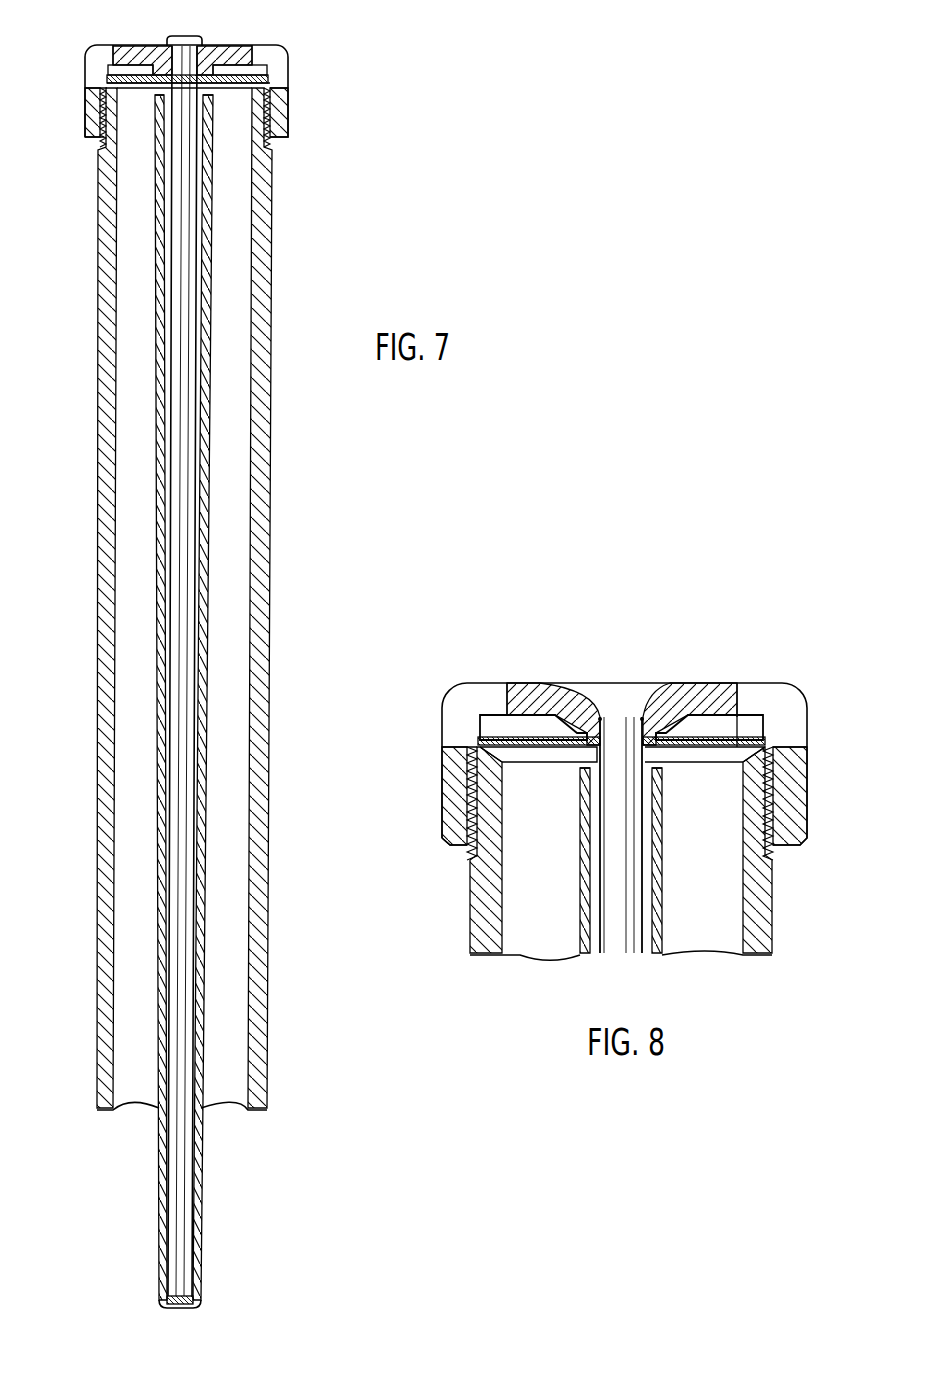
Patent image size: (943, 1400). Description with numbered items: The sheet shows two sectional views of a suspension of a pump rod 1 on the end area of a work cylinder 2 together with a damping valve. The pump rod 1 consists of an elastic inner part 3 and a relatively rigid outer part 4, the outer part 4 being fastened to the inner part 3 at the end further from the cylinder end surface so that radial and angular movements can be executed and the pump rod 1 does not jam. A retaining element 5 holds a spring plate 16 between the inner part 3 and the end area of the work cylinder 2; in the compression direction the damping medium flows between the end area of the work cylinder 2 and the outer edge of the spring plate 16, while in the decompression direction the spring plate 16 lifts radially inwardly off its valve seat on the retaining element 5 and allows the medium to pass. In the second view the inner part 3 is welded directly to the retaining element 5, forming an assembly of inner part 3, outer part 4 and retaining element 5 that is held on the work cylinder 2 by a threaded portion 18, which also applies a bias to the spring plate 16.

In FIG. 7, the pump rod 1 is at (218, 467).
In FIG. 8, the pump rod 1 is at (564, 892).
In FIG. 7, the work cylinder 2 is at (272, 278).
In FIG. 8, the work cylinder 2 is at (775, 945).
In FIG. 7, the inner part 3 is at (178, 222).
In FIG. 8, the inner part 3 is at (645, 850).
In FIG. 8, the outer part 4 is at (580, 810).
In FIG. 7, the retaining element 5 is at (226, 54).
In FIG. 8, the retaining element 5 is at (556, 694).
In FIG. 7, the spring plate 16 is at (264, 64).
In FIG. 8, the spring plate 16 is at (770, 699).
In FIG. 8, the threaded portion 18 is at (774, 857).